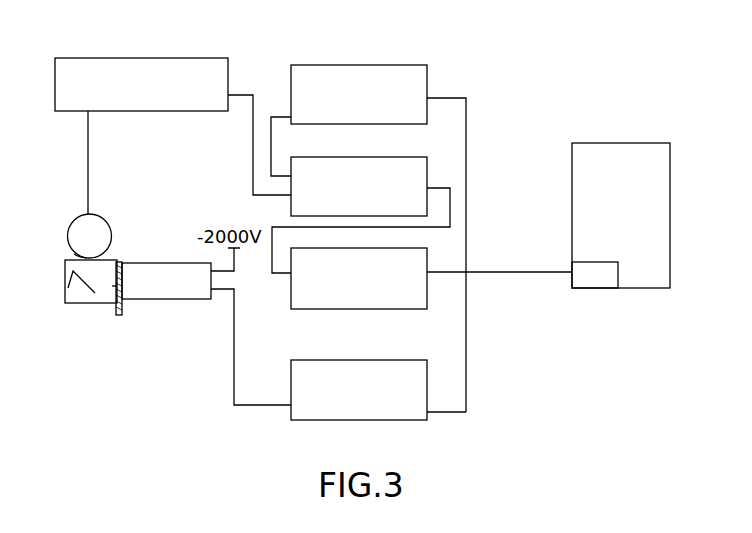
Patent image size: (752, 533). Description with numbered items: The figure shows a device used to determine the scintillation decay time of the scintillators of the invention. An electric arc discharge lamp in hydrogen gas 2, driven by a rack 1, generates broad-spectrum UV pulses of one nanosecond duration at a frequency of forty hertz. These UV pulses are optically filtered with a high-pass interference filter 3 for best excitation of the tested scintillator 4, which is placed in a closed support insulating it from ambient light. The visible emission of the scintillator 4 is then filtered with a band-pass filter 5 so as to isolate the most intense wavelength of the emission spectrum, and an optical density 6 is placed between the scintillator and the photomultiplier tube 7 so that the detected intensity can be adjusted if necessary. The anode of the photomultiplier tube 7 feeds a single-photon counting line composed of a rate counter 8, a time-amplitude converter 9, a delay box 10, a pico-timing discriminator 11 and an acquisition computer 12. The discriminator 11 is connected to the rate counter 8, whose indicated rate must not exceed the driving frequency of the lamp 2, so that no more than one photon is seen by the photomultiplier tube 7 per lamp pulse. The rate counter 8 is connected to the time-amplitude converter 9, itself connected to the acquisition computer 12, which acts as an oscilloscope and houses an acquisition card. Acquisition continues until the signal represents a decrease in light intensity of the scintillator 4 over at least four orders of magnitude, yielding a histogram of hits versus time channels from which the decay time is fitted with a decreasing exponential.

The rack 1 is at (178, 68).
The electric arc discharge lamp in hydrogen gas 2 is at (95, 224).
The high-pass interference filter 3 is at (80, 252).
The tested scintillator 4 is at (65, 286).
The band-pass filter 5 is at (112, 289).
The optical density 6 is at (122, 308).
The photomultiplier tube 7 is at (142, 268).
The rate counter 8 is at (317, 68).
The time-amplitude converter 9 is at (410, 160).
The delay box 10 is at (420, 294).
The pico-timing discriminator 11 is at (424, 417).
The acquisition computer 12 is at (608, 283).